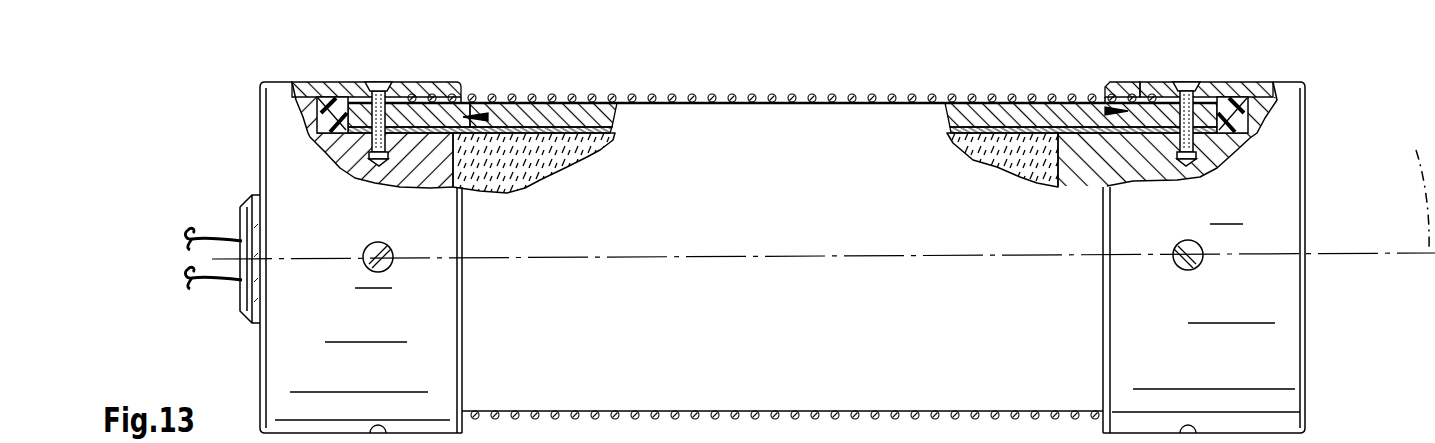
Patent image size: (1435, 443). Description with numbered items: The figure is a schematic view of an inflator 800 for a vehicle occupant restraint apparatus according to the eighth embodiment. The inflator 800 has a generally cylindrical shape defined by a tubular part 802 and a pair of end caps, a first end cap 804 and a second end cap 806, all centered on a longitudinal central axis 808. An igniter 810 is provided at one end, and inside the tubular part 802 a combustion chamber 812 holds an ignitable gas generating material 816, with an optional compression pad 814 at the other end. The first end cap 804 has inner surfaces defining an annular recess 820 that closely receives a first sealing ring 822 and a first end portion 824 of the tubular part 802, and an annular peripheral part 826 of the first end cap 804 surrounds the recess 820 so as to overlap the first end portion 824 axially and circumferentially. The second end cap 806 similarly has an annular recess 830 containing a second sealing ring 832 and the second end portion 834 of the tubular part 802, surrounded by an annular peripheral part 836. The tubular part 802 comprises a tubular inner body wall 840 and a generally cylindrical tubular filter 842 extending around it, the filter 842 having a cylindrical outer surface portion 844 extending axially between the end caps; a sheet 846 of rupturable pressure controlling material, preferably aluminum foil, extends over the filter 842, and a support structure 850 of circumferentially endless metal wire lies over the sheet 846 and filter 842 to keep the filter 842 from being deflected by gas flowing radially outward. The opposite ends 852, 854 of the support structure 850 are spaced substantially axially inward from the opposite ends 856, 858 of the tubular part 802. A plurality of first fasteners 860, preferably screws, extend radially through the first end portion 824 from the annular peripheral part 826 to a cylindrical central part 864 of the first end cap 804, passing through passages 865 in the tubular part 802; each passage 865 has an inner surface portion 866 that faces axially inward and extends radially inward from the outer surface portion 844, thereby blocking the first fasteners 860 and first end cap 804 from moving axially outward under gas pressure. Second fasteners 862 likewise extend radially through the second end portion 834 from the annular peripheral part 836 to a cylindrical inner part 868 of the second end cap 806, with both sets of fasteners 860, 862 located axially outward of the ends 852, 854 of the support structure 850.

The inflator 800 is at (240, 92).
The tubular part 802 is at (750, 95).
The first end cap 804 is at (259, 149).
The second end cap 806 is at (1308, 117).
The longitudinal central axis 808 is at (1411, 185).
The igniter 810 is at (242, 310).
The combustion chamber 812 is at (570, 162).
The compression pad 814 is at (1097, 160).
The ignitable gas generating material 816 is at (507, 178).
The annular recess 820 is at (488, 117).
The first sealing ring 822 is at (320, 125).
The first end portion 824 is at (418, 108).
The annular peripheral part 826 is at (417, 82).
The annular recess 830 is at (1105, 111).
The second sealing ring 832 is at (1230, 104).
The second end portion 834 is at (1132, 81).
The annular peripheral part 836 is at (1143, 82).
The tubular inner body wall 840 is at (372, 148).
The tubular filter 842 is at (580, 118).
The cylindrical outer surface portion 844 is at (503, 100).
The sheet of rupturable pressure controlling material 846 is at (841, 160).
The support structure 850 is at (653, 97).
The end of support structure 852 is at (410, 95).
The end of support structure 854 is at (1153, 95).
The first end of tubular part 856 is at (318, 107).
The second end of tubular part 858 is at (1245, 128).
The first fasteners 860 is at (383, 82).
The second fasteners 862 is at (1198, 244).
The cylindrical central part 864 is at (420, 168).
The passages 865 is at (360, 167).
The inner surface portion 866 is at (370, 83).
The cylindrical inner part 868 is at (1158, 163).